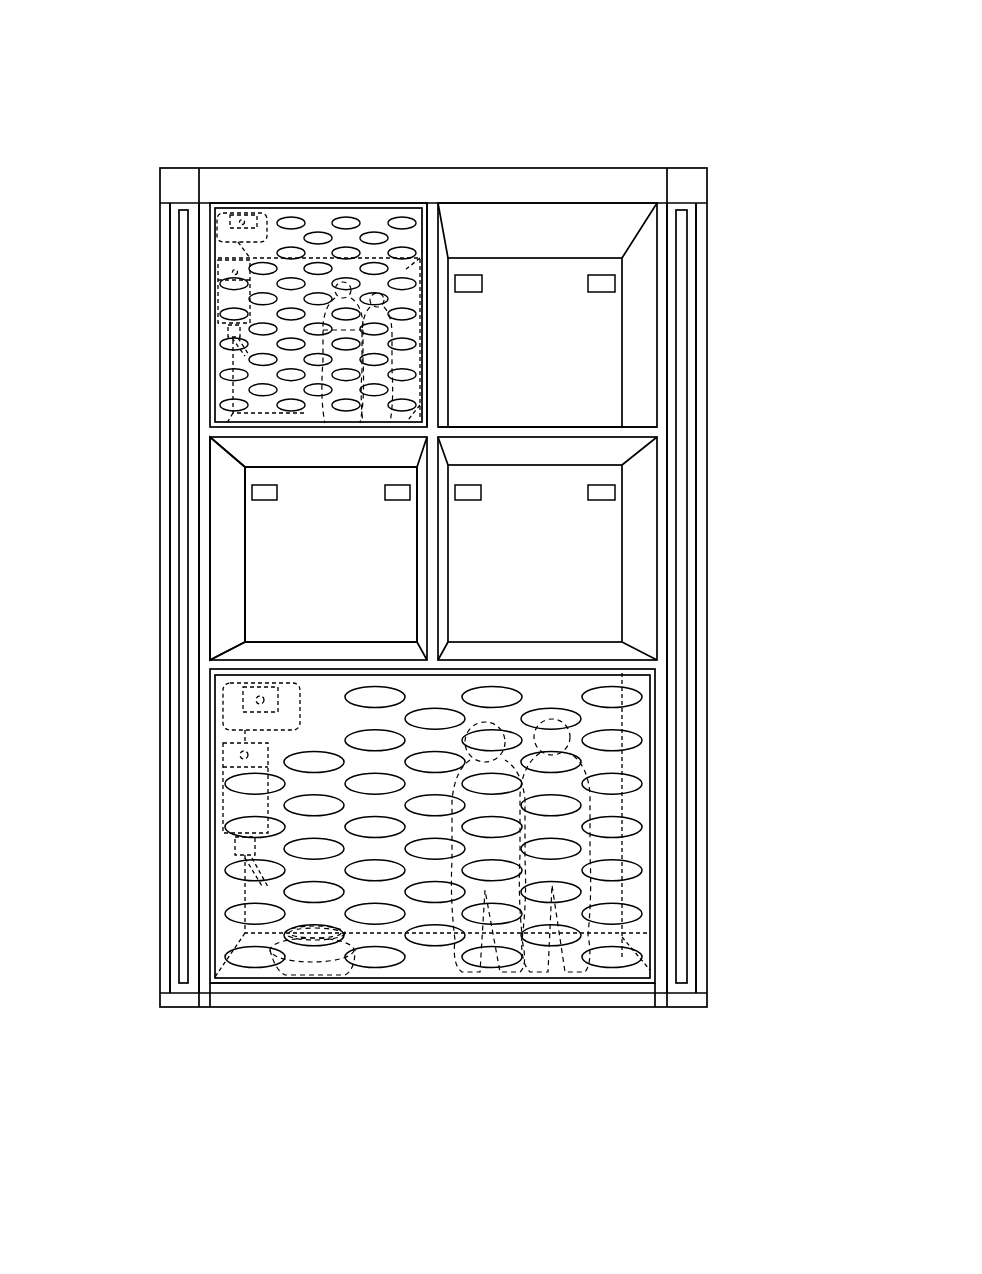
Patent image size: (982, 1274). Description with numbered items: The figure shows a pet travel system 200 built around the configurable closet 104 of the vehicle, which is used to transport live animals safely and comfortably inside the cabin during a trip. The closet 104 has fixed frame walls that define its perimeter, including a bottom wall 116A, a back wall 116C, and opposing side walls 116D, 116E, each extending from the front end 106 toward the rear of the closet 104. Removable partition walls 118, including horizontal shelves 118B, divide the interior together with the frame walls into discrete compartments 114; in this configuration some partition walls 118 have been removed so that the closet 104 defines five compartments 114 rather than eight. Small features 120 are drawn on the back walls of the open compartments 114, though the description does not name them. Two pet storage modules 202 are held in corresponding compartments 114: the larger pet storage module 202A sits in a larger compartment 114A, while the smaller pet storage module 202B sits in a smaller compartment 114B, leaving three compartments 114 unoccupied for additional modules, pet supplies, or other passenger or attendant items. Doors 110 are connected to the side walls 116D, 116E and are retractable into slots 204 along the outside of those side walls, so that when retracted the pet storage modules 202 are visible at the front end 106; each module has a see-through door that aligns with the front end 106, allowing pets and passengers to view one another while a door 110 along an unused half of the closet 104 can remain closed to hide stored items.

The pet travel system 200 is at (338, 42).
The configurable closet 104 is at (652, 162).
The front end 106 is at (330, 185).
The door 110 is at (182, 265).
The slot 204 is at (170, 322).
The compartment 114 is at (524, 203).
The compartment 114A is at (612, 672).
The compartment 114B is at (387, 203).
The bottom wall 116A is at (388, 982).
The back wall 116C is at (298, 545).
The side wall 116D is at (224, 590).
The side wall 116E is at (640, 512).
The partition wall 118 is at (437, 235).
The horizontal shelf 118B is at (583, 425).
The sensor 120 is at (598, 283).
The pet storage module 202 is at (268, 228).
The pet storage module 202A is at (630, 716).
The pet storage module 202B is at (300, 203).